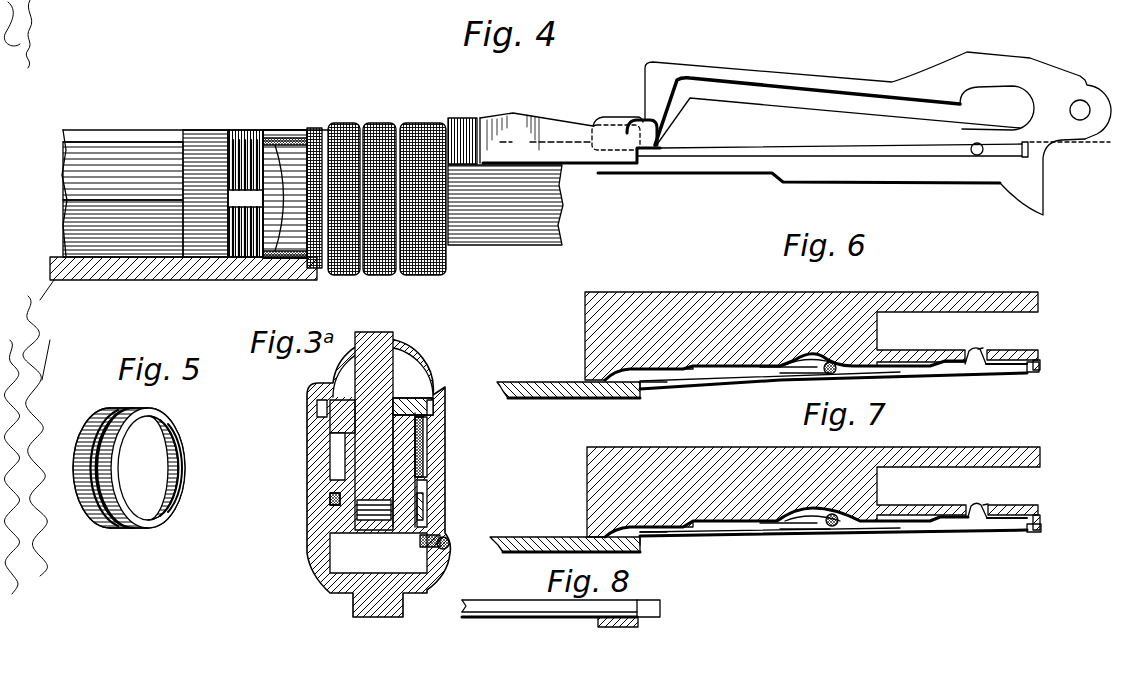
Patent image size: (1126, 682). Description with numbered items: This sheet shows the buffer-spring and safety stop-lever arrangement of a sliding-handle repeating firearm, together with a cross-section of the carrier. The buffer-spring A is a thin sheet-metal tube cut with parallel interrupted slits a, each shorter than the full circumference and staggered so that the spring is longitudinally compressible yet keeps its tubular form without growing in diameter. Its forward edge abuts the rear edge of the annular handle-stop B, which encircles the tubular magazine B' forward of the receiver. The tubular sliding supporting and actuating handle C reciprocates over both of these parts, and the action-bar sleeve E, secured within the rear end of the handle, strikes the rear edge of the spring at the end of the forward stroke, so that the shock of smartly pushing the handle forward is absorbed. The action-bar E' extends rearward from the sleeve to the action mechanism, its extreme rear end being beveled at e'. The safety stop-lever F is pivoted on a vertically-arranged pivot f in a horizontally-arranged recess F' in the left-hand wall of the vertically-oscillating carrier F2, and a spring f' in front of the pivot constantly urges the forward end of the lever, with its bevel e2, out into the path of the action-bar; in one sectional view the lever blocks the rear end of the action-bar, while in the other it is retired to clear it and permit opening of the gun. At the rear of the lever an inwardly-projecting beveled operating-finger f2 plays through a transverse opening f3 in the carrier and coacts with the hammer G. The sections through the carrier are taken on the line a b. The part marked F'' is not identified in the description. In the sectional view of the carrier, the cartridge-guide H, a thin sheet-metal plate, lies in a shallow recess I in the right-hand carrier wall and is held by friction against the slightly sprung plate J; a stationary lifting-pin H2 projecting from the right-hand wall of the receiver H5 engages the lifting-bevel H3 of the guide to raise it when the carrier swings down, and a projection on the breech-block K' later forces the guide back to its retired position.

In FIG. 4, the tubular magazine B' is at (123, 180).
In FIG. 4, the annular handle-stop B is at (205, 180).
In FIG. 4, the interrupted slits a is at (230, 143).
In FIG. 5, the interrupted slits a is at (88, 468).
In FIG. 4, the buffer-spring A is at (255, 143).
In FIG. 5, the buffer-spring A is at (182, 442).
In FIG. 4, the action-bar sleeve E is at (284, 201).
In FIG. 4, the sliding supporting and actuating handle C is at (385, 267).
In FIG. 4, the action-bar E' is at (570, 127).
In FIG. 6, the action-bar E' is at (568, 378).
In FIG. 7, the action-bar E' is at (565, 533).
In FIG. 8, the action-bar E' is at (550, 602).
In FIG. 4, the bevel e' is at (629, 160).
In FIG. 6, the bevel e' is at (647, 398).
In FIG. 7, the bevel e' is at (651, 550).
In FIG. 8, the bevel e' is at (661, 605).
In FIG. 6, the bevel e2 is at (647, 382).
In FIG. 7, the bevel e2 is at (645, 529).
In FIG. 4, the safety stop-lever F is at (832, 168).
In FIG. 6, the safety stop-lever F is at (803, 391).
In FIG. 7, the safety stop-lever F is at (804, 544).
In FIG. 3A, the safety stop-lever F is at (311, 506).
In FIG. 4, the recess F' is at (841, 177).
In FIG. 6, the recess F' is at (822, 385).
In FIG. 7, the recess F' is at (823, 537).
In FIG. 4, the vertically-oscillating carrier F2 is at (878, 98).
In FIG. 6, the vertically-oscillating carrier F2 is at (684, 291).
In FIG. 7, the vertically-oscillating carrier F2 is at (688, 447).
In FIG. 3A, the vertically-oscillating carrier F2 is at (332, 520).
In FIG. 3A, the spring piece F'' is at (311, 493).
In FIG. 6, the pivot f is at (827, 382).
In FIG. 7, the pivot f is at (827, 536).
In FIG. 6, the spring f' is at (790, 383).
In FIG. 7, the spring f' is at (790, 538).
In FIG. 6, the operating-finger f2 is at (978, 346).
In FIG. 7, the operating-finger f2 is at (977, 520).
In FIG. 6, the transverse opening f3 is at (972, 352).
In FIG. 7, the transverse opening f3 is at (973, 504).
In FIG. 4, the section line a b is at (1072, 141).
In FIG. 3A, the hammer G is at (383, 373).
In FIG. 3A, the breech-block K' is at (336, 405).
In FIG. 3A, the friction-spring plate J is at (423, 428).
In FIG. 3A, the cartridge-guide H is at (440, 447).
In FIG. 3A, the lifting-pin H2 is at (426, 542).
In FIG. 3A, the lifting-bevel H3 is at (423, 498).
In FIG. 3A, the right-hand wall of the receiver H5 is at (328, 452).
In FIG. 3A, the shallow recess I is at (423, 517).